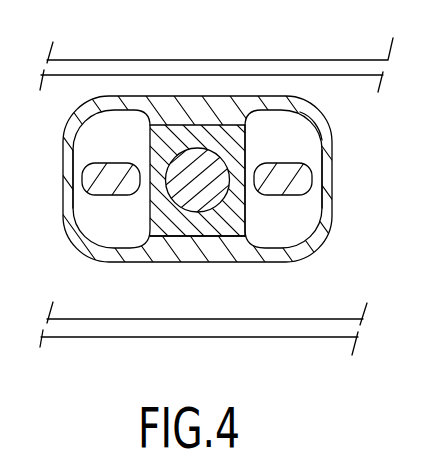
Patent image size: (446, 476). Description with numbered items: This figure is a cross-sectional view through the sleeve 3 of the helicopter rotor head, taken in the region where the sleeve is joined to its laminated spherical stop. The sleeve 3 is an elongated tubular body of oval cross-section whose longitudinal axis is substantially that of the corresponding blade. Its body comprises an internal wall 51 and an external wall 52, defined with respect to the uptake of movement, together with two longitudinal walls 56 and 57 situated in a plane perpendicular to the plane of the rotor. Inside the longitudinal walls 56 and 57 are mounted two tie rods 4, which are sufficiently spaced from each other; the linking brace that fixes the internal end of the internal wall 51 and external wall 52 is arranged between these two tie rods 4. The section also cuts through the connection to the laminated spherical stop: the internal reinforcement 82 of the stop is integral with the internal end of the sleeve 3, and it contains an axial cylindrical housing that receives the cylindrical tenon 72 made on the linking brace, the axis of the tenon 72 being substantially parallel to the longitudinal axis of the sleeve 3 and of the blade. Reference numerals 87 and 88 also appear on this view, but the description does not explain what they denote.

The sleeve 3 is at (190, 113).
The tie rod 4 is at (104, 190).
The internal wall 51 is at (213, 244).
The external wall 52 is at (264, 97).
The longitudinal wall 56 is at (72, 160).
The longitudinal wall 57 is at (324, 166).
The cylindrical tenon 72 is at (314, 140).
The internal reinforcement 82 is at (242, 97).
The lower rib 87 is at (246, 240).
The central core 88 is at (240, 134).